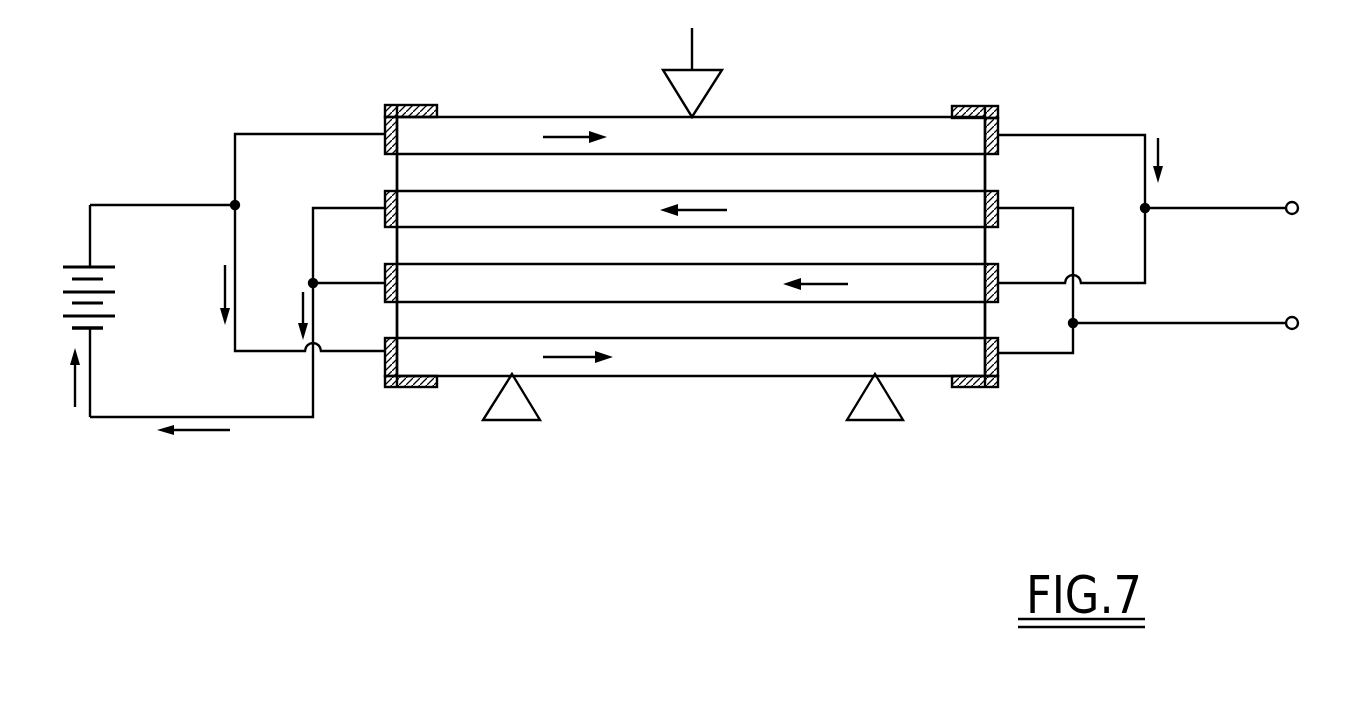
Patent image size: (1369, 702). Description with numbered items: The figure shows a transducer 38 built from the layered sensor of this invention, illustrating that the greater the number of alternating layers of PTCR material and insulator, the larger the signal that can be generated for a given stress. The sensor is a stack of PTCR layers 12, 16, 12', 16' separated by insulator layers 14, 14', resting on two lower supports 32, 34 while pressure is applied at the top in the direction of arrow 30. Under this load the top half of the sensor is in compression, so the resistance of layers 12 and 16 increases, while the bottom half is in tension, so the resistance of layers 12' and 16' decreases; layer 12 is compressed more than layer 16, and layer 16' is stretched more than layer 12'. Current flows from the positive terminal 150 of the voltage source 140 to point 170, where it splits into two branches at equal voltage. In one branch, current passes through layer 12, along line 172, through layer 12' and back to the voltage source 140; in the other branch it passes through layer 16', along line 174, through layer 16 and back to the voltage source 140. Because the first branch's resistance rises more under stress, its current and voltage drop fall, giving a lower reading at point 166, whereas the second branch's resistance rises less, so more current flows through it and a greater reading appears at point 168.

The electrochemical cell stack 38 is at (531, 45).
The arrow 30 is at (695, 56).
The layer 12 is at (714, 116).
The spacer / gap layer 14 is at (721, 217).
The layer 16 is at (715, 221).
The layer 12' is at (720, 292).
The spacer / gap layer (second unit) 14' is at (726, 324).
The layer 16' is at (721, 364).
The support 32 is at (535, 405).
The support 34 is at (855, 405).
The point 170 is at (235, 204).
The line 172 is at (1148, 199).
The line 174 is at (1075, 343).
The point 168 is at (1299, 213).
The point 166 is at (1299, 318).
The positive terminal 150 is at (90, 264).
The voltage source 140 is at (62, 311).